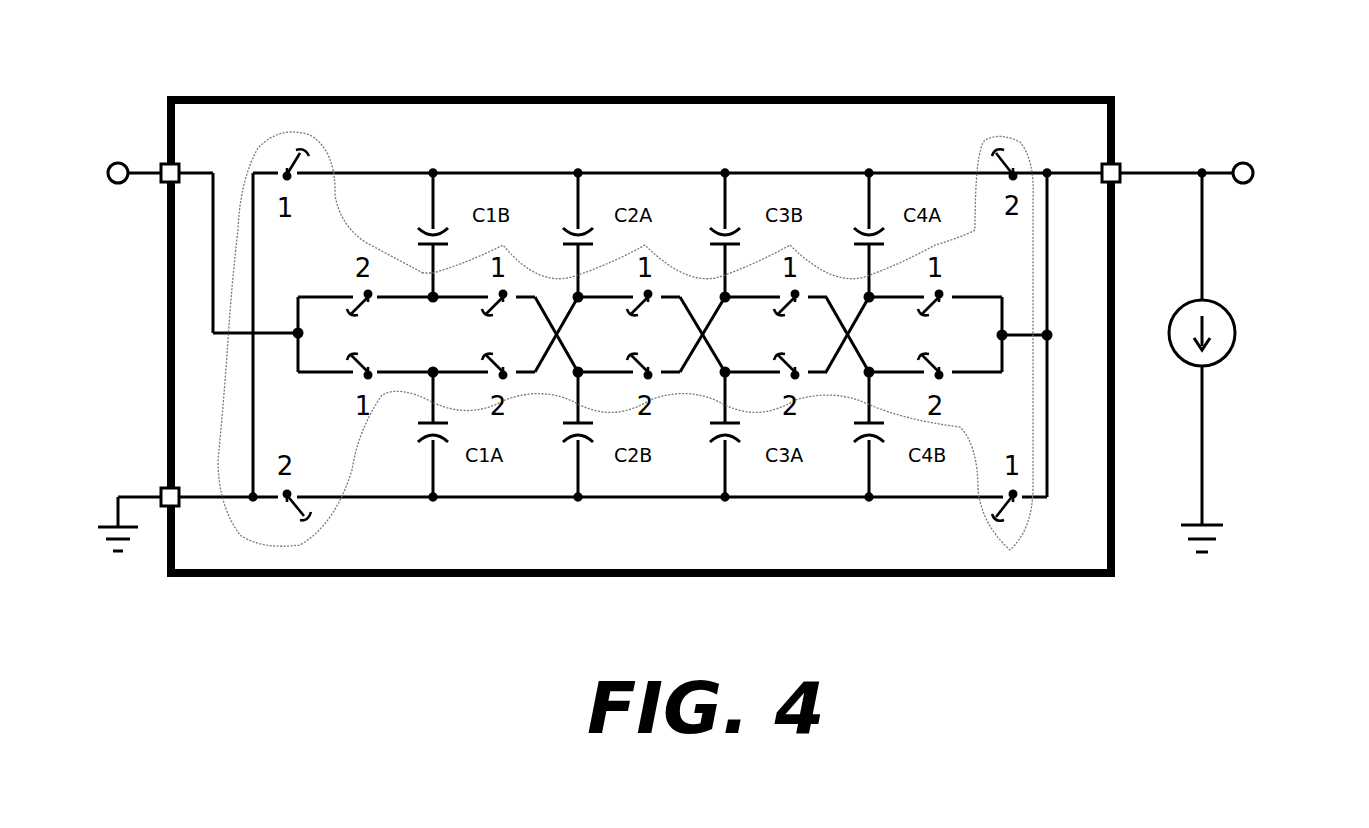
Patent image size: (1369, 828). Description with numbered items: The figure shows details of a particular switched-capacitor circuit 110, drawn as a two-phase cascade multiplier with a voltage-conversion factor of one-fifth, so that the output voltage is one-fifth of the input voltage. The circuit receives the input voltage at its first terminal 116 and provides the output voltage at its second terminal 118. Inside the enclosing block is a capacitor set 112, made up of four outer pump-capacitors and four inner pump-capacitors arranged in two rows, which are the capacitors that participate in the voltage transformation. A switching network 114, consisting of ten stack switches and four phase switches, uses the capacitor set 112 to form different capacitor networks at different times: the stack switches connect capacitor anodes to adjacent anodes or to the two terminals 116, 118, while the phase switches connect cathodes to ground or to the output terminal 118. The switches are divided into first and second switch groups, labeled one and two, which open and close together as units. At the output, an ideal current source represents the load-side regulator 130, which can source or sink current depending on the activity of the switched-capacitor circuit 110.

The switched-capacitor circuit 110 is at (313, 92).
The capacitor set 112 is at (595, 160).
The switching network 114 is at (330, 158).
The first terminal 116 is at (108, 162).
The second terminal 118 is at (1252, 160).
The regulator 130 is at (1228, 362).